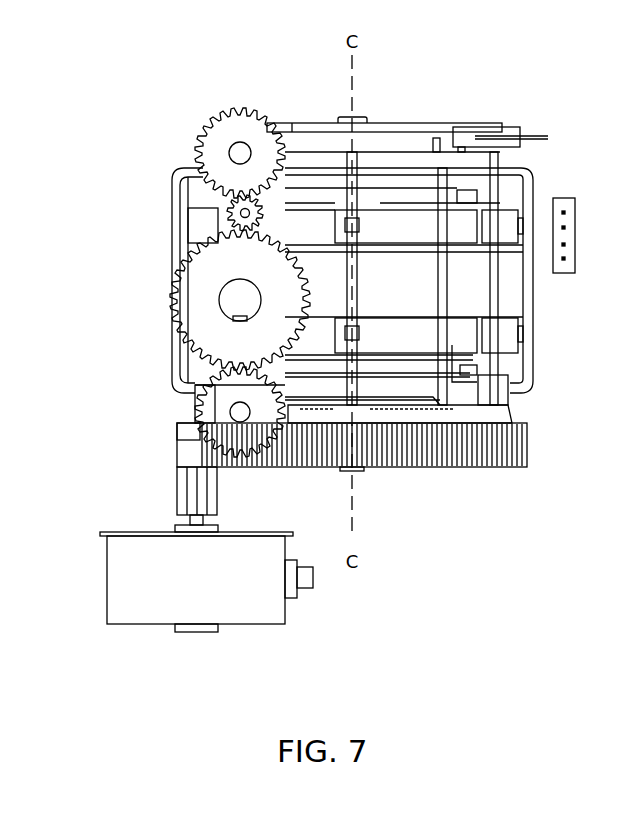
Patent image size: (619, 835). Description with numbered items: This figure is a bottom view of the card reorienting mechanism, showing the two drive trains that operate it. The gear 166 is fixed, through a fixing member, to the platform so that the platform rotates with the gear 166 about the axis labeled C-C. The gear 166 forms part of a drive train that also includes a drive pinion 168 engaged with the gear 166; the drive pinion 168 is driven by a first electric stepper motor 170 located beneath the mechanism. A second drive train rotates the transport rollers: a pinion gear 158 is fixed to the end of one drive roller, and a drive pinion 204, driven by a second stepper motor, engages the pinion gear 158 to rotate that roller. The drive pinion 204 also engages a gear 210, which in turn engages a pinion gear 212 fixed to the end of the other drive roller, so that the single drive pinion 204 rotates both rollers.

The pinion gear 158 is at (203, 138).
The drive pinion 204 is at (238, 213).
The gear 210 is at (172, 296).
The pinion gear 212 is at (200, 398).
The gear 166 is at (442, 458).
The drive pinion 168 is at (200, 497).
The first electric stepper motor 170 is at (285, 608).